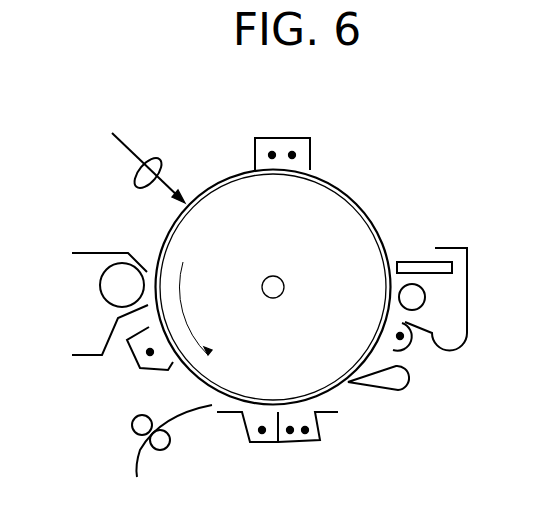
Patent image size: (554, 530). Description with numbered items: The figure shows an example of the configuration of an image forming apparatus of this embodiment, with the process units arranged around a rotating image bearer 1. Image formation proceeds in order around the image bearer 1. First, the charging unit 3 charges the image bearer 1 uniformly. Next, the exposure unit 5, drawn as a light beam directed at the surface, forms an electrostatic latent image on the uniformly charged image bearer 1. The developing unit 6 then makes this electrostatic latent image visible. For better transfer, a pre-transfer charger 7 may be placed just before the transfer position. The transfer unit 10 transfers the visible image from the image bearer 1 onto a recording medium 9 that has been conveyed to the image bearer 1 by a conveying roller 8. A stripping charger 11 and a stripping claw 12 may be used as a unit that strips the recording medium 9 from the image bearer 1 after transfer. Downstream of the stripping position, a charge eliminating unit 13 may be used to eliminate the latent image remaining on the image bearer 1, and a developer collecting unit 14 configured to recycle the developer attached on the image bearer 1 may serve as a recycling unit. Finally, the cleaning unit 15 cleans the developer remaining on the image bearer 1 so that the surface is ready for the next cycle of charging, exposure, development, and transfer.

The image bearer 1 is at (300, 187).
The charging unit 3 is at (273, 139).
The exposure unit 5 is at (118, 145).
The developing unit 6 is at (108, 284).
The pre-transfer charger 7 is at (135, 365).
The conveying roller 8 is at (132, 433).
The recording medium 9 is at (185, 408).
The transfer unit 10 is at (268, 445).
The stripping charger 11 is at (320, 445).
The stripping claw 12 is at (403, 390).
The charge eliminating unit 13 is at (415, 345).
The developer collecting unit 14 is at (425, 297).
The cleaning unit 15 is at (410, 262).